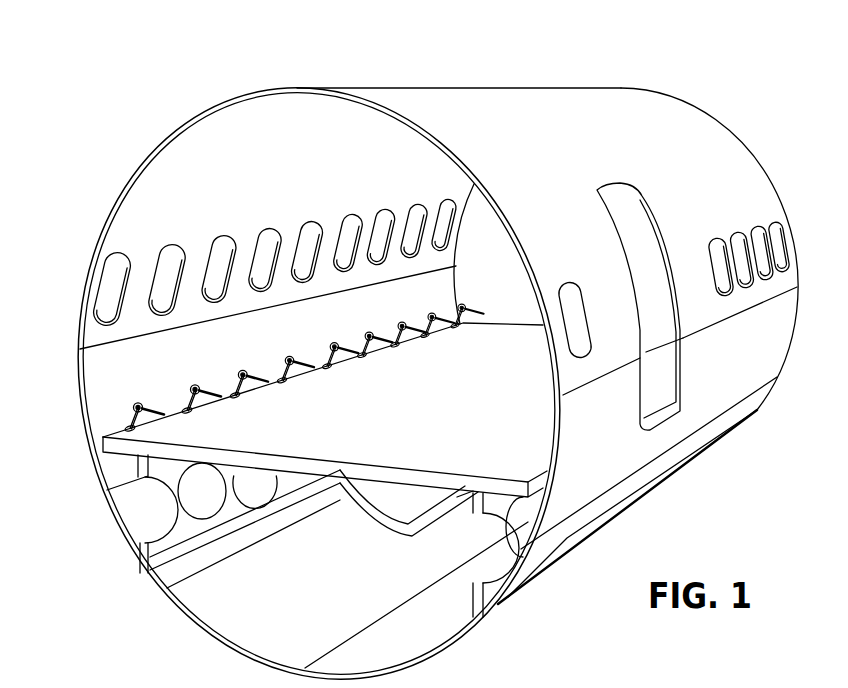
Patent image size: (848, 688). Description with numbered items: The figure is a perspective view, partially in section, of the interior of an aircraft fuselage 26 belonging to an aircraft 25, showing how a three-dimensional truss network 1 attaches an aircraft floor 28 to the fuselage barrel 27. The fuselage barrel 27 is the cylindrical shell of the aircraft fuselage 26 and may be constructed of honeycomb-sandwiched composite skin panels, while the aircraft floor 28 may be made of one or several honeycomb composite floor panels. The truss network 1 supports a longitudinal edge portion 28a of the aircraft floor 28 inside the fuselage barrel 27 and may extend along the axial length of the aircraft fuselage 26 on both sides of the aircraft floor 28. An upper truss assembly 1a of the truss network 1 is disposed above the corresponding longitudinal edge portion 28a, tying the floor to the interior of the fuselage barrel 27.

The aircraft 25 is at (412, 62).
The aircraft fuselage 26 is at (587, 80).
The fuselage barrel 27 is at (243, 126).
The aircraft floor 28 is at (516, 350).
The longitudinal edge portion 28a is at (170, 435).
The truss network 1 is at (232, 344).
The upper truss assembly 1a is at (412, 305).